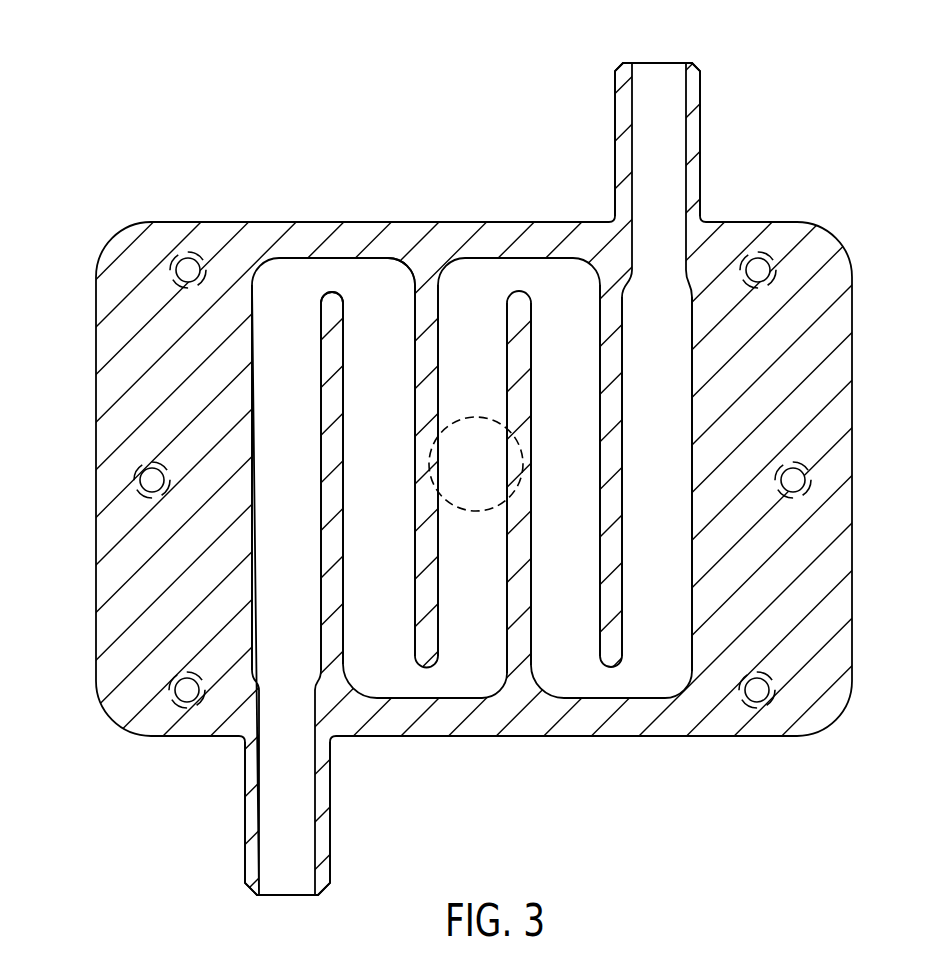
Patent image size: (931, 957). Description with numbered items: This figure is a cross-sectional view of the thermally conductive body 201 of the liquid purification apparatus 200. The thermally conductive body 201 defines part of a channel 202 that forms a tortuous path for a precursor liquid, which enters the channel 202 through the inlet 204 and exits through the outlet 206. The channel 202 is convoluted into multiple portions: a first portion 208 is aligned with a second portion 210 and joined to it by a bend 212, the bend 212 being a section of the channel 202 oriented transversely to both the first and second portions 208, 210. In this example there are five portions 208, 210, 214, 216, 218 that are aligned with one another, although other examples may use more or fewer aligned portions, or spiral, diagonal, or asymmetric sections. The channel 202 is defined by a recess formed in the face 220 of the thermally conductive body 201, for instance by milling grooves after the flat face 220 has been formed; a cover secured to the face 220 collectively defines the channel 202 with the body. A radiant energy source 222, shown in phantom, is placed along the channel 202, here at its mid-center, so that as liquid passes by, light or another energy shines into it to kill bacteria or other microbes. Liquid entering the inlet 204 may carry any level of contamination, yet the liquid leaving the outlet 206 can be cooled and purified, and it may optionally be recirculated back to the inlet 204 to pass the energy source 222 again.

The liquid purification apparatus 200 is at (250, 112).
The thermally conductive body 201 is at (96, 265).
The channel 202 is at (320, 240).
The inlet 204 is at (603, 105).
The outlet 206 is at (230, 828).
The first portion 208 is at (290, 445).
The second portion 210 is at (375, 500).
The bend 212 is at (358, 280).
The portion 214 is at (473, 307).
The portion 216 is at (567, 307).
The portion 218 is at (658, 293).
The face 220 is at (222, 233).
The radiant energy source 222 is at (457, 477).